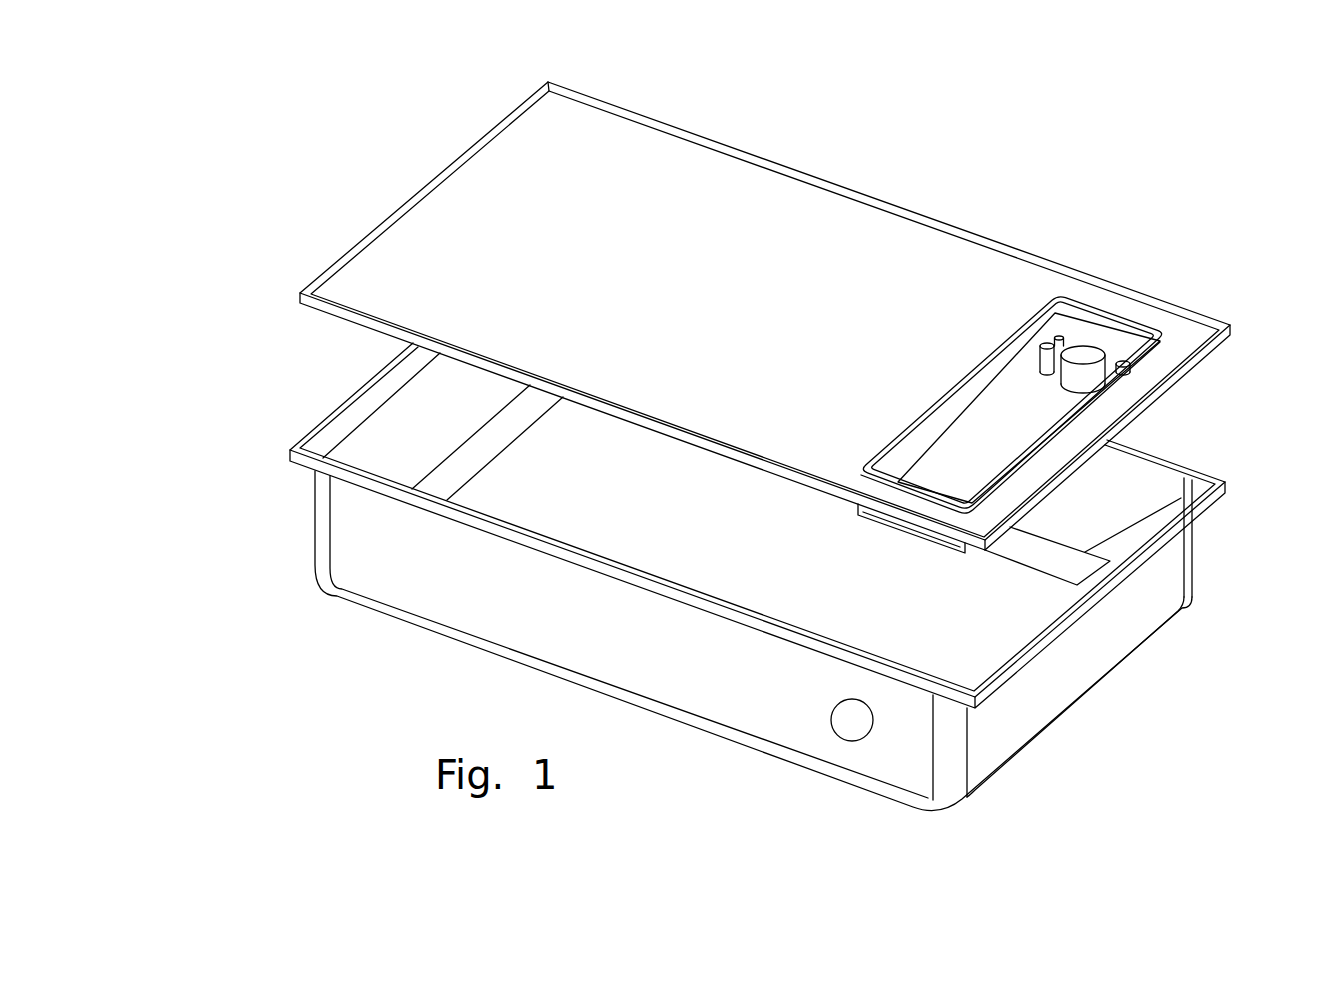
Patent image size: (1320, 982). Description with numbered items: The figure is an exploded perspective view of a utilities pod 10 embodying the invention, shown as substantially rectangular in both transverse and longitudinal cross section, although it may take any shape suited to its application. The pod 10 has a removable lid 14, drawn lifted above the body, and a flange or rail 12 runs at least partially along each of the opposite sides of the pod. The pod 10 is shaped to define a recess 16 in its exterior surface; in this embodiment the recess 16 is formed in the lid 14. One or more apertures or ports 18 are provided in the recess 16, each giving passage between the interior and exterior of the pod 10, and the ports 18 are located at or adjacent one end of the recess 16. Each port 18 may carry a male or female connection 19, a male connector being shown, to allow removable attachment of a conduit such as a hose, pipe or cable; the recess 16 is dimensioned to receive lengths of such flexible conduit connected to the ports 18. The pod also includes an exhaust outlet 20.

The utilities pod 10 is at (995, 159).
The flange or rail 12 is at (288, 452).
The removable lid 14 is at (719, 323).
The recess 16 is at (970, 453).
The aperture or port 18 is at (1089, 340).
The male or female connection 19 is at (1054, 338).
The exhaust outlet 20 is at (845, 727).